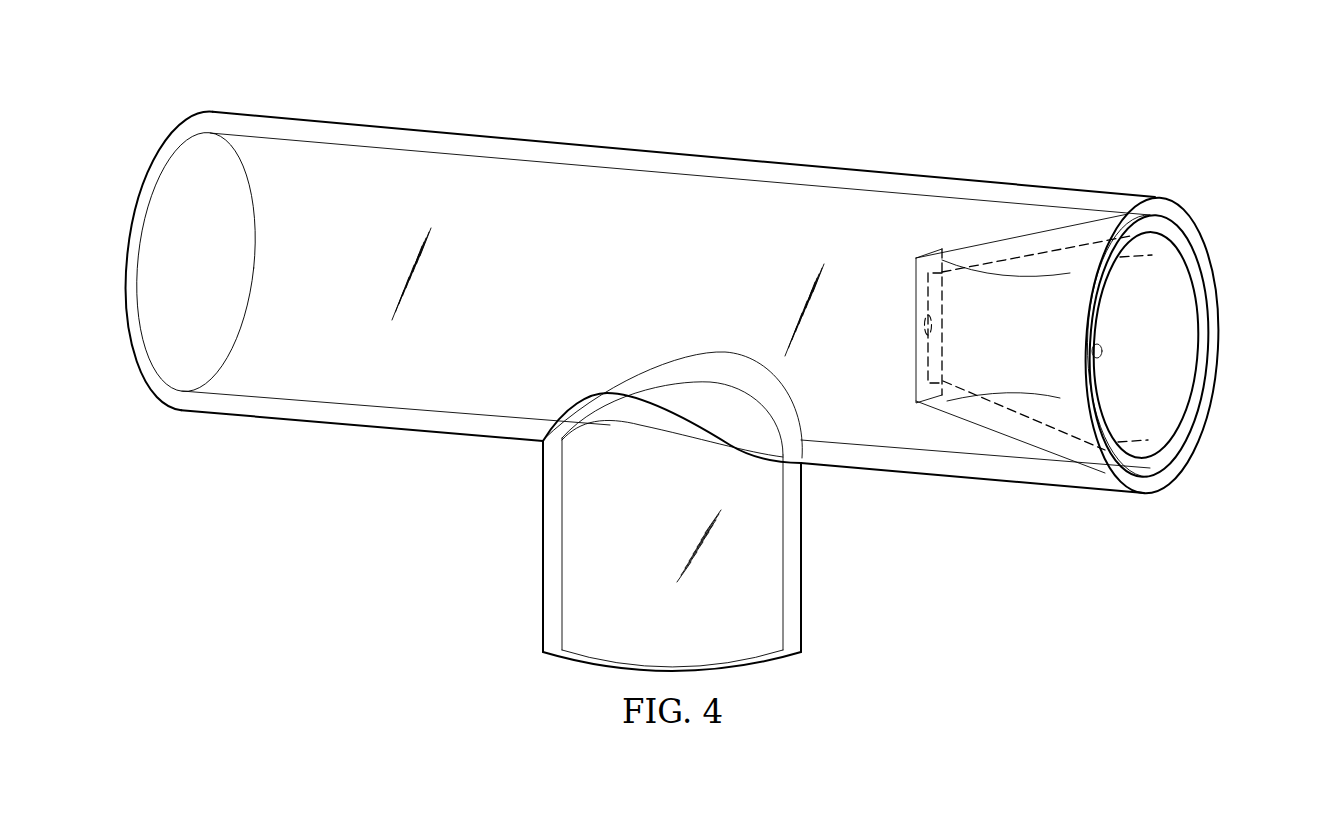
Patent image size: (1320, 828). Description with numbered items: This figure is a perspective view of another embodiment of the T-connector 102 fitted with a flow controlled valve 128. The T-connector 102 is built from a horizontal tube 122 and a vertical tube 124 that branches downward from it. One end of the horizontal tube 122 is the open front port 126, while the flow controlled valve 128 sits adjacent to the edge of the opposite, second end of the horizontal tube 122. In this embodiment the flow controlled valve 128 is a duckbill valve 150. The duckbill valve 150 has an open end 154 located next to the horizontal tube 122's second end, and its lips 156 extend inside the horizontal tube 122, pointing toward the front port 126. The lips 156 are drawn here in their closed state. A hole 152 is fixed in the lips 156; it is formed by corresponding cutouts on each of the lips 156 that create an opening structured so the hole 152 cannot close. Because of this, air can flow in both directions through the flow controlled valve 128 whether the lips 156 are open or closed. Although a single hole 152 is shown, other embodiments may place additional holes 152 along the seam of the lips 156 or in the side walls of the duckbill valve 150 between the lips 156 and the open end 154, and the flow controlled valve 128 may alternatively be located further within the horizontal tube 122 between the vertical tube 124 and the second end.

The T-connector 102 is at (688, 380).
The horizontal tube 122 is at (802, 166).
The vertical tube 124 is at (543, 548).
The front port 126 is at (130, 258).
The flow controlled valve 128 is at (1243, 268).
The duckbill valve 150 is at (1027, 427).
The hole 152 is at (922, 328).
The open end 154 is at (1093, 353).
The lips 156 is at (894, 252).